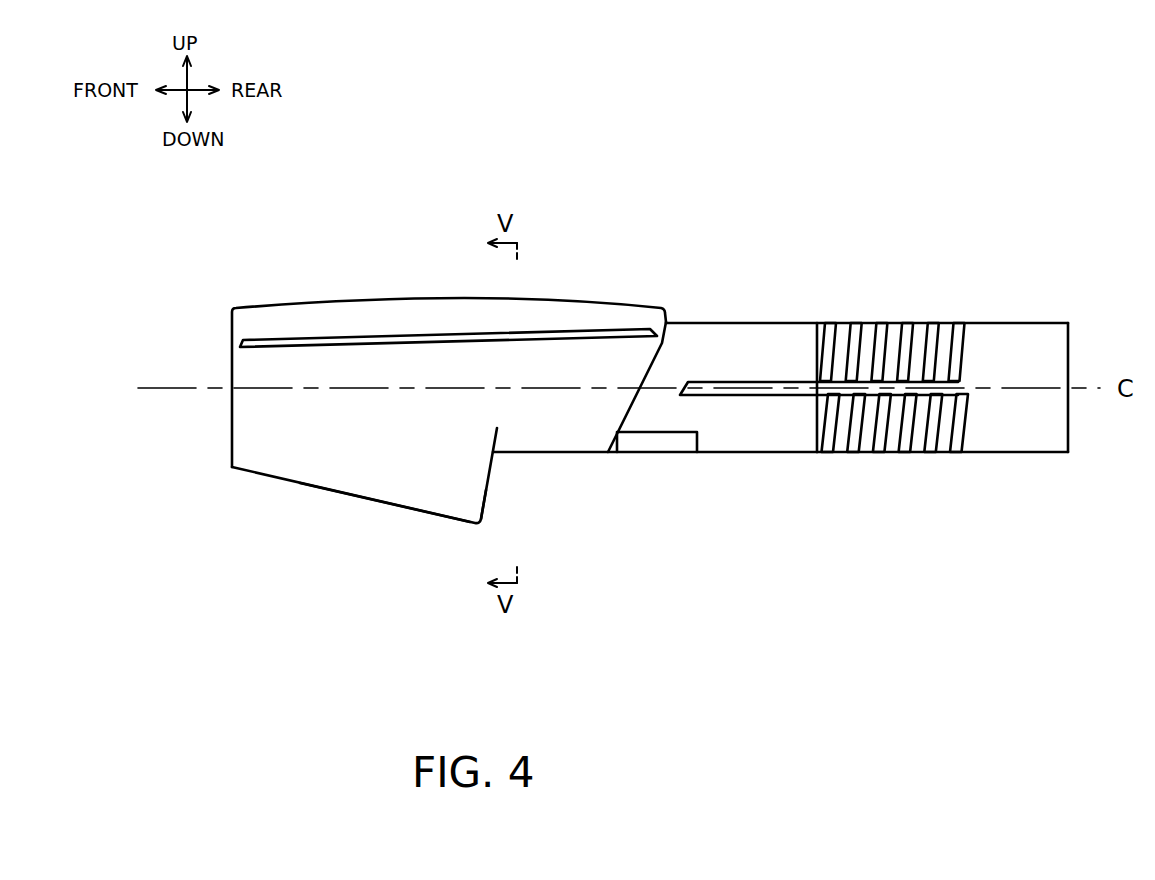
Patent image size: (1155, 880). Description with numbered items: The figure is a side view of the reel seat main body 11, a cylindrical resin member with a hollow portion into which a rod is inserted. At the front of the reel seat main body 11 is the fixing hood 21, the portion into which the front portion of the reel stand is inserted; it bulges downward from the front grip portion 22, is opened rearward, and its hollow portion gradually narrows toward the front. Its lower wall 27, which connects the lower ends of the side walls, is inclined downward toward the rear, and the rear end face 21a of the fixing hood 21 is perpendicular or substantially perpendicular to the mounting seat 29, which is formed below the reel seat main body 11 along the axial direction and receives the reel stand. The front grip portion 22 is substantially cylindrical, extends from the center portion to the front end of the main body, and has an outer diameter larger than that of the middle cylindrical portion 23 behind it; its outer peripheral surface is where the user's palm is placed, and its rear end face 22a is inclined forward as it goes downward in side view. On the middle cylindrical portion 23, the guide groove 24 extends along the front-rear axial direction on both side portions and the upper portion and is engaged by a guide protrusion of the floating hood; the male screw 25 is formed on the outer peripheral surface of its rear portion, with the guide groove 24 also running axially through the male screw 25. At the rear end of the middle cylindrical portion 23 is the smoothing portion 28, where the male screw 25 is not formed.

The reel seat main body 11 is at (758, 205).
The fixing hood 21 is at (448, 472).
The rear end face of the fixing hood 21a is at (485, 502).
The front grip portion 22 is at (397, 362).
The rear end face of the front grip portion 22a is at (657, 358).
The middle cylindrical portion 23 is at (757, 452).
The guide groove 24 is at (737, 385).
The male screw 25 is at (867, 453).
The lower wall 27 is at (438, 515).
The smoothing portion 28 is at (1068, 462).
The mounting seat 29 is at (588, 452).